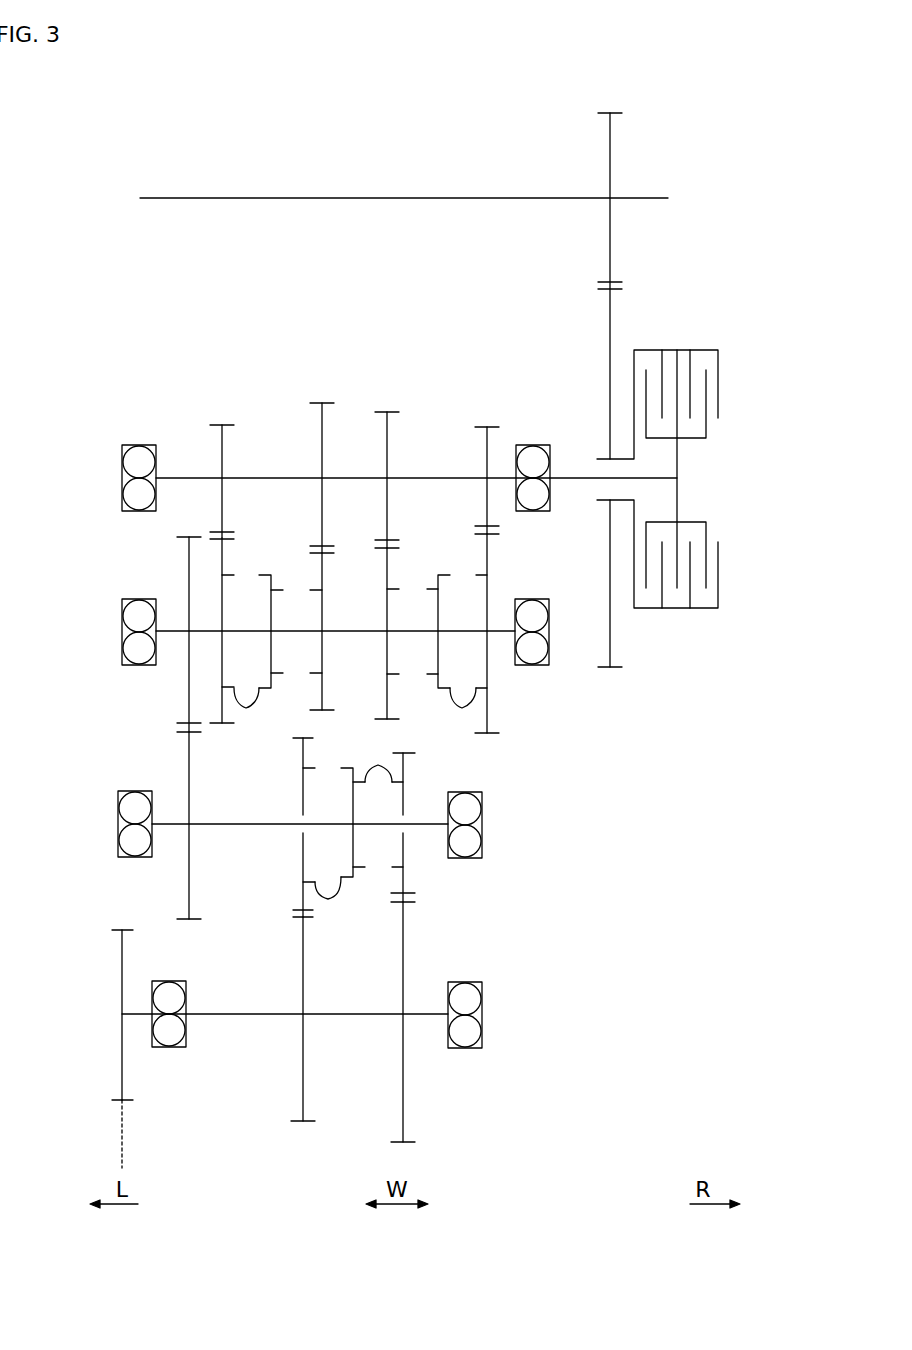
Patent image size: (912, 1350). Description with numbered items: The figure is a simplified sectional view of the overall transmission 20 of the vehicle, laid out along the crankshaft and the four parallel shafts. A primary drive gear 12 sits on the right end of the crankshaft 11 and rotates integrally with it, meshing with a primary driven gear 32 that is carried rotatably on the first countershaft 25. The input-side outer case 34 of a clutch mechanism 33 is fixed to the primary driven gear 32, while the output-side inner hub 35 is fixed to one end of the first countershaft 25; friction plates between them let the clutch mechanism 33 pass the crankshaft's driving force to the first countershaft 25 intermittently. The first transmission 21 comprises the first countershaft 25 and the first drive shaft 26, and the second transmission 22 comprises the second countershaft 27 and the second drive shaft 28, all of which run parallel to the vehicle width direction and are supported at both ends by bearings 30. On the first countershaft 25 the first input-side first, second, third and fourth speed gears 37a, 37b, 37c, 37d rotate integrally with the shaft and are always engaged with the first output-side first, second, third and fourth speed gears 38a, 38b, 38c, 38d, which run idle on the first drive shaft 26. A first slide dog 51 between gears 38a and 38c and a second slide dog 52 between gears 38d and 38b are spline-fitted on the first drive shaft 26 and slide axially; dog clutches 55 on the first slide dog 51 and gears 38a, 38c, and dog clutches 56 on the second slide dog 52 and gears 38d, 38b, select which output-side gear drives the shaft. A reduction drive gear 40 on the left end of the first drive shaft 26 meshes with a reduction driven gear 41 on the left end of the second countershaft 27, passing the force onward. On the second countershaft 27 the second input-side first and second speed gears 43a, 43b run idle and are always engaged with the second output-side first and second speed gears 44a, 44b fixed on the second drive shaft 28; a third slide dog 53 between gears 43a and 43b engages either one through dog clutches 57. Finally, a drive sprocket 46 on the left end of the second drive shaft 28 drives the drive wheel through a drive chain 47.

The crankshaft 11 is at (250, 200).
The primary drive gear 12 is at (612, 157).
The first transmission mechanism 20 is at (118, 414).
The first transmission 21 is at (109, 566).
The second transmission 22 is at (508, 872).
The first countershaft 25 is at (195, 476).
The first drive shaft 26 is at (162, 634).
The second countershaft 27 is at (215, 826).
The second drive shaft 28 is at (230, 1016).
The bearing 30 is at (122, 458).
The primary driven gear 32 is at (612, 320).
The clutch mechanism 33 is at (681, 447).
The outer case 34 is at (648, 350).
The inner hub 35 is at (707, 430).
The first input-side first speed gear 37a is at (488, 440).
The first input-side second speed gear 37b is at (222, 450).
The first input-side third speed gear 37c is at (388, 440).
The first input-side fourth speed gear 37d is at (323, 430).
The first output-side first speed gear 38a is at (488, 548).
The first output-side second speed gear 38b is at (224, 558).
The first output-side third speed gear 38c is at (389, 560).
The first output-side fourth speed gear 38d is at (323, 570).
The reduction drive gear 40 is at (189, 565).
The reduction driven gear 41 is at (189, 885).
The second input-side first speed gear 43a is at (403, 800).
The second input-side second speed gear 43b is at (303, 790).
The second output-side first speed gear 44a is at (403, 960).
The second output-side second speed gear 44b is at (303, 978).
The drive sprocket 46 is at (122, 960).
The drive chain 47 is at (122, 1132).
The first slide dog 51 is at (440, 612).
The second slide dog 52 is at (270, 600).
The third slide dog 53 is at (353, 855).
The dog clutch 55 is at (430, 560).
The dog clutch 56 is at (268, 553).
The dog clutch 57 is at (375, 763).